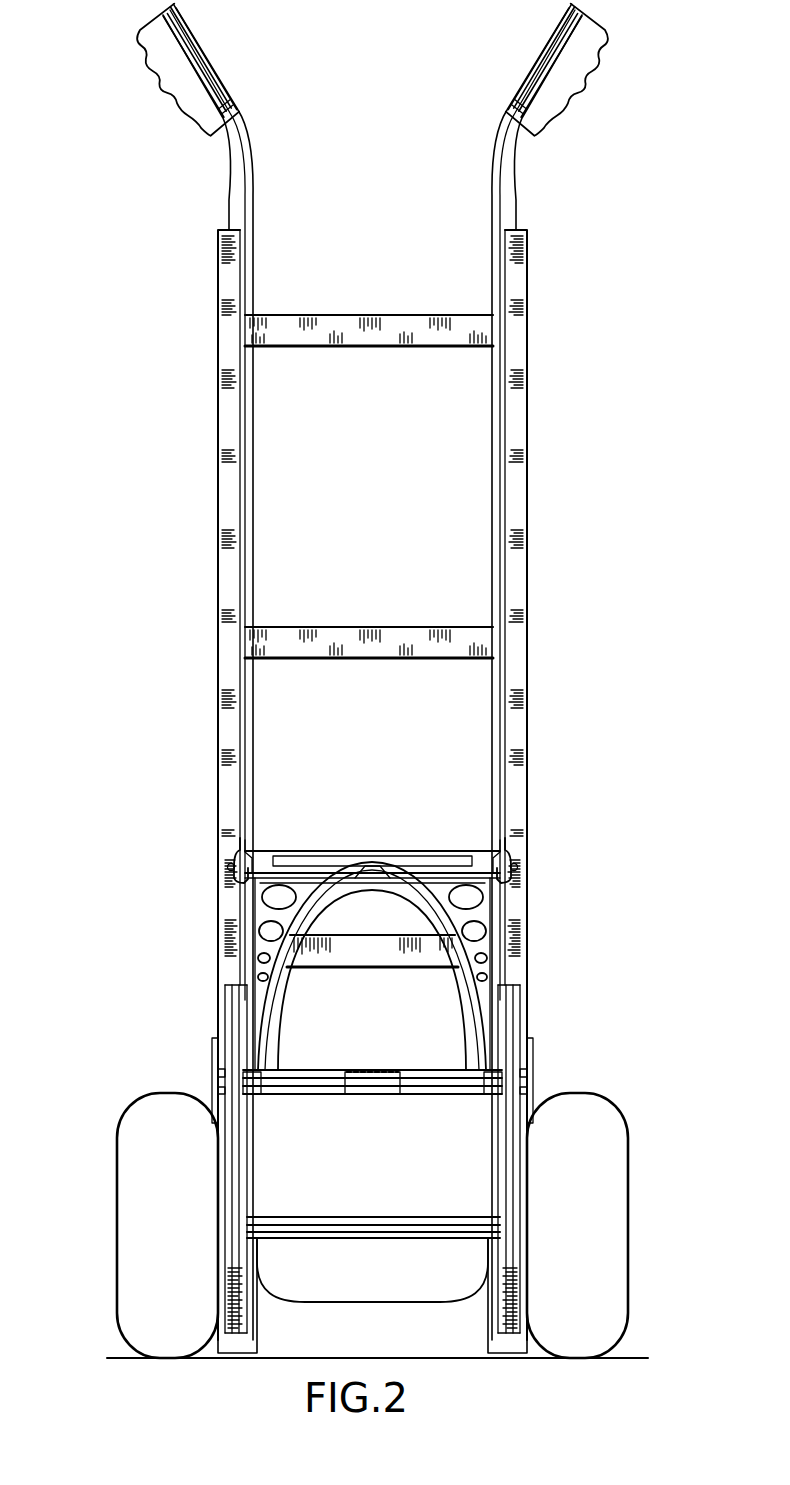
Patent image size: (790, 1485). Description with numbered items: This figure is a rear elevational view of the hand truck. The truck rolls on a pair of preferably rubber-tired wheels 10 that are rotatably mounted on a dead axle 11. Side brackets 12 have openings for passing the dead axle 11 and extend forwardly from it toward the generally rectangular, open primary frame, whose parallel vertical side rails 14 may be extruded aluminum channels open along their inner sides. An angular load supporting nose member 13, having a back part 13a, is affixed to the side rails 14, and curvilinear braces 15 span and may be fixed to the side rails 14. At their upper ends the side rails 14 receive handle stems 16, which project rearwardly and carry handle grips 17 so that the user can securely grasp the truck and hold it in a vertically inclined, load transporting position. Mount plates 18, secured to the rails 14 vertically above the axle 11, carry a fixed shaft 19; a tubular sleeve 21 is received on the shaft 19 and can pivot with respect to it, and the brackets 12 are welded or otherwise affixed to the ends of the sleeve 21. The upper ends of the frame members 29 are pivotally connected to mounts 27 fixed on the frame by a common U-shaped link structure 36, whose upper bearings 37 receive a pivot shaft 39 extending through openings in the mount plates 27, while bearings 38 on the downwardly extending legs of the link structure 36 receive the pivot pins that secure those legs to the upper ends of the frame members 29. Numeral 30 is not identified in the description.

The rubber-tired wheels 10 is at (122, 1273).
The dead axle 11 is at (363, 1240).
The side brackets 12 is at (255, 1191).
The load supporting nose member 13 is at (222, 1366).
The back part of nose member 13a is at (364, 1346).
The side rails 14 is at (493, 481).
The curvilinear braces 15 is at (382, 321).
The handle stems 16 is at (517, 184).
The handle grips 17 is at (196, 98).
The mount plates 18 is at (217, 1078).
The fixed shaft 19 is at (372, 1068).
The tubular sleeve 21 is at (320, 1069).
The mount plates 27 is at (236, 851).
The frame members 29 is at (262, 1093).
The lower leg members 30 is at (238, 1155).
The U-shaped link structure 36 is at (434, 890).
The upper bearings 37 is at (262, 860).
The bearings 38 is at (212, 1052).
The pivot shaft 39 is at (228, 869).